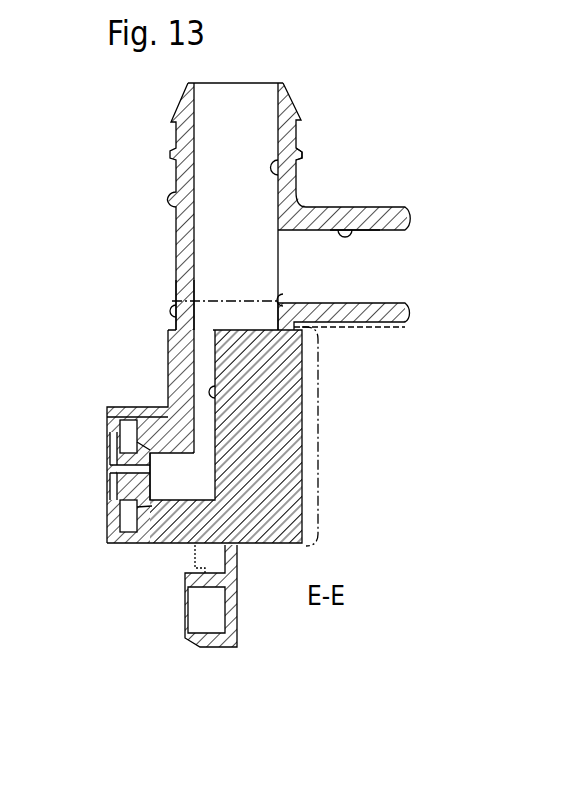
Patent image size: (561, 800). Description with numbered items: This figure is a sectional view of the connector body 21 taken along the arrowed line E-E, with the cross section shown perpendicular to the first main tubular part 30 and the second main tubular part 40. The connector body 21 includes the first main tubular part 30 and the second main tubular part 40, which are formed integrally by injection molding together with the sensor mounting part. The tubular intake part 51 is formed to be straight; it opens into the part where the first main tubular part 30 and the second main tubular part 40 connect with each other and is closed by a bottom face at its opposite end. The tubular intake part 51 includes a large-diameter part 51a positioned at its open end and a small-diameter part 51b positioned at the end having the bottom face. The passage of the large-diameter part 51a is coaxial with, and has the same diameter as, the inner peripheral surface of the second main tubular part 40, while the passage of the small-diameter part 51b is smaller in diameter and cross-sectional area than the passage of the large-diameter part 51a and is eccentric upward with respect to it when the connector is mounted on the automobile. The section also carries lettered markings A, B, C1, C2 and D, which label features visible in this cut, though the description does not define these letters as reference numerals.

The connector body 21 is at (268, 262).
The second main tubular part 40 is at (177, 141).
The first main tubular part 30 is at (398, 212).
The flange lower surface A is at (355, 230).
The ridge B is at (297, 153).
The first clearance flange C1 is at (282, 299).
The bore in block C2 is at (215, 402).
The tubular intake part 51 is at (114, 410).
The large-diameter part 51a is at (170, 311).
The small-diameter part 51b is at (166, 353).
The flow passage D is at (200, 494).